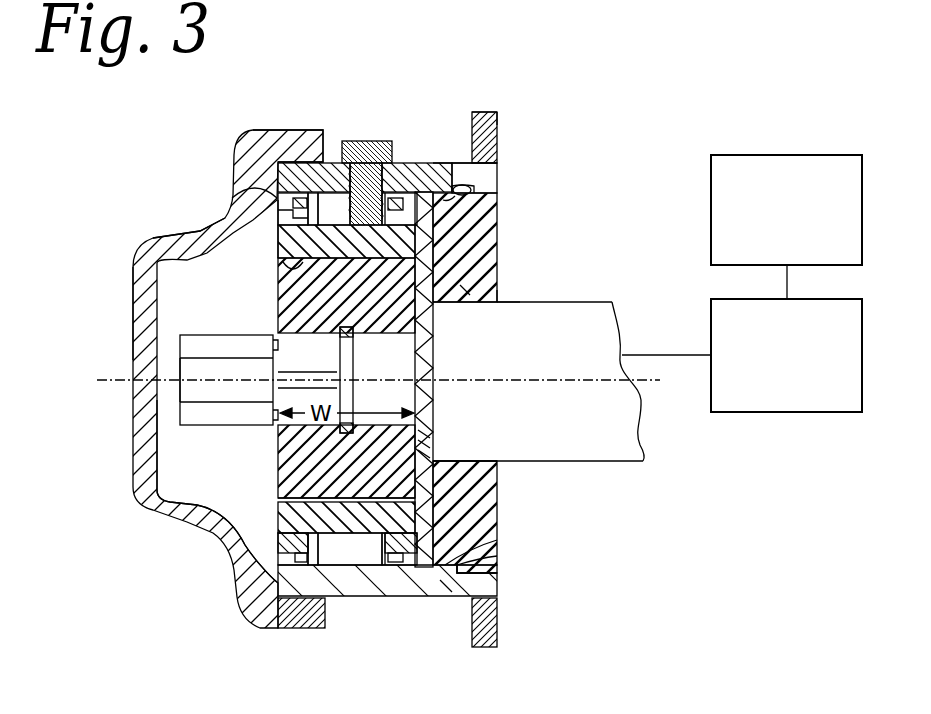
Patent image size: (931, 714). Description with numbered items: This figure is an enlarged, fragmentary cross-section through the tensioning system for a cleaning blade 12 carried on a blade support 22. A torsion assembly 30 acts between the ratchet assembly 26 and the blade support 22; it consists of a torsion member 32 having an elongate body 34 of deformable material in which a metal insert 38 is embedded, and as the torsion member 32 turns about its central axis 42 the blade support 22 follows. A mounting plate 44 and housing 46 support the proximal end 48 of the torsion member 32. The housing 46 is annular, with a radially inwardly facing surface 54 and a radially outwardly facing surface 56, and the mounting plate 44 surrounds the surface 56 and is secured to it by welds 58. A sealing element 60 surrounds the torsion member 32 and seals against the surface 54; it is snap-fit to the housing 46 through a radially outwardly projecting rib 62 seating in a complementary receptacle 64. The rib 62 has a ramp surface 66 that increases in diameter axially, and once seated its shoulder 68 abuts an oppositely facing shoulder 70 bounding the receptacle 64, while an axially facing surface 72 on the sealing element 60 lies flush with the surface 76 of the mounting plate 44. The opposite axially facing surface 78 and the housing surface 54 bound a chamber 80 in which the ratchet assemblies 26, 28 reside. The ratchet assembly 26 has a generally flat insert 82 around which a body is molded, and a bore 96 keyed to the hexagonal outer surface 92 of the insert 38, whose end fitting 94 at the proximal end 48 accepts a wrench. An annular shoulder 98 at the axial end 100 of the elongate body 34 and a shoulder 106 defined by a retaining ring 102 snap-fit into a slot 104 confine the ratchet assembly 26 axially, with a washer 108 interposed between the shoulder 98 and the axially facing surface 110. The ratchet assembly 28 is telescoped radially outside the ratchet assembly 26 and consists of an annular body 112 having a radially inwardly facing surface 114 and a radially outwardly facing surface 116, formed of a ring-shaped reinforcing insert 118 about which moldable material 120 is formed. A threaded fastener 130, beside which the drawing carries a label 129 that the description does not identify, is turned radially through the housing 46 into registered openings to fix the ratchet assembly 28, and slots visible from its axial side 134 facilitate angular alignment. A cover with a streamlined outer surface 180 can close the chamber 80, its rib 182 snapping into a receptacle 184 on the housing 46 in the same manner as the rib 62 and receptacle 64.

The cleaning blade 12 is at (775, 253).
The blade support 22 is at (775, 395).
The ratchet assembly 26 is at (433, 435).
The ratchet assembly 28 is at (290, 160).
The torsion assembly 30 is at (627, 468).
The torsion member 32 is at (500, 298).
The elongate body 34 is at (645, 455).
The metal insert 38 is at (232, 395).
The central axis 42 is at (537, 380).
The mounting plate 44 is at (497, 120).
The housing 46 is at (397, 596).
The proximal end 48 is at (180, 385).
The radially inwardly facing surface 54 is at (497, 540).
The radially outwardly facing surface 56 is at (443, 596).
The welds 58 is at (470, 160).
The sealing element 60 is at (485, 503).
The rib 62 is at (425, 163).
The receptacle 64 is at (497, 558).
The ramp surface 66 is at (448, 585).
The shoulder 68 is at (495, 163).
The shoulder 70 is at (470, 186).
The axially facing surface 72 is at (495, 476).
The surface 76 is at (497, 128).
The axially facing surface 78 is at (277, 333).
The chamber 80 is at (410, 497).
The insert 82 is at (463, 290).
The outer surface 92 is at (178, 354).
The end fitting 94 is at (180, 415).
The bore 96 is at (221, 398).
The annular shoulder 98 is at (515, 299).
The axial end 100 is at (432, 383).
The retaining ring 102 is at (135, 332).
The slot 104 is at (215, 425).
The shoulder 106 is at (133, 300).
The washer 108 is at (362, 560).
The axially facing surface 110 is at (433, 453).
The annular body 112 is at (277, 595).
The radially inwardly facing surface 114 is at (290, 230).
The radially outwardly facing surface 116 is at (405, 195).
The ring-shaped reinforcing insert 118 is at (305, 192).
The moldable material 120 is at (235, 575).
The bolt 129 is at (372, 160).
The threaded fastener 130 is at (347, 165).
The axial side 134 is at (277, 226).
The streamlined outer surface 180 is at (172, 232).
The rib 182 is at (480, 198).
The receptacle 184 is at (318, 598).